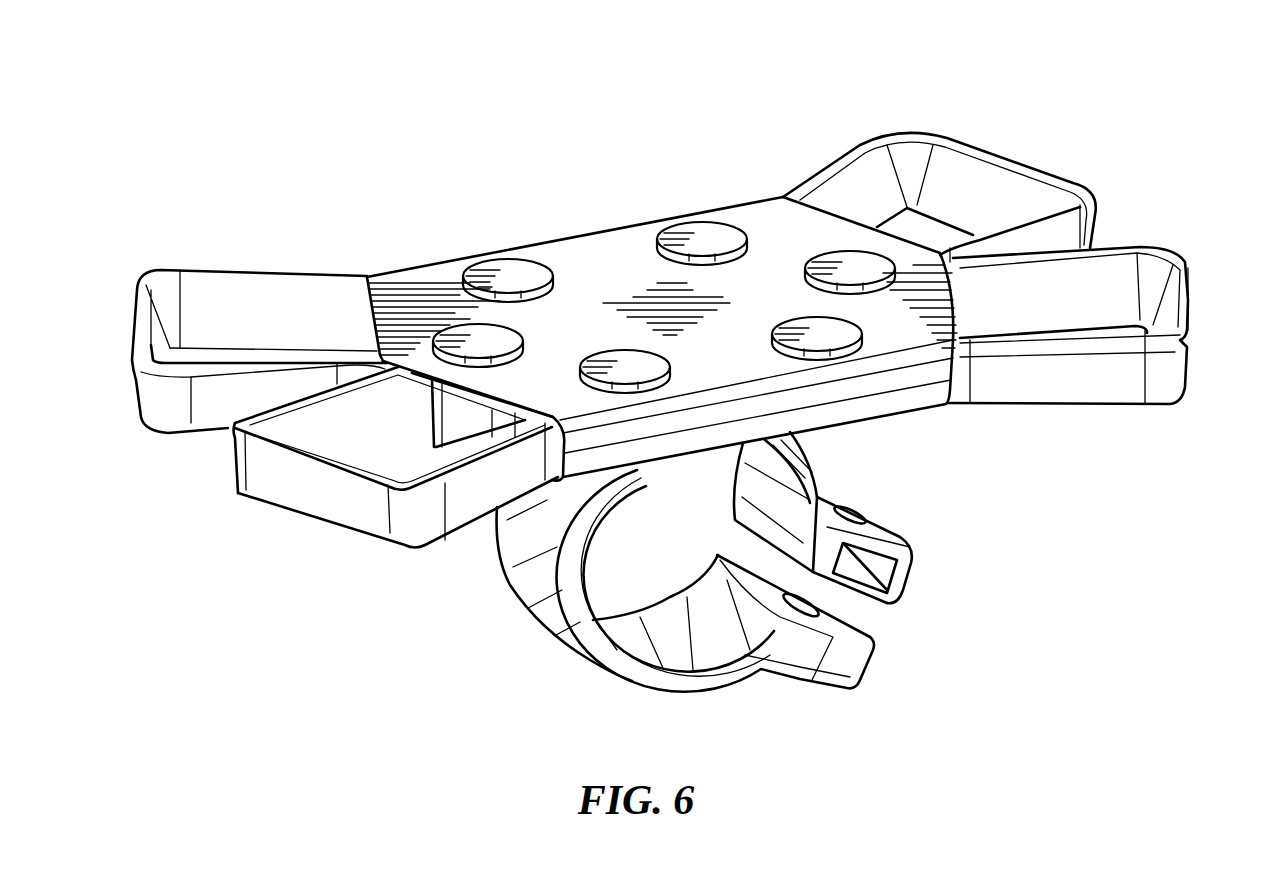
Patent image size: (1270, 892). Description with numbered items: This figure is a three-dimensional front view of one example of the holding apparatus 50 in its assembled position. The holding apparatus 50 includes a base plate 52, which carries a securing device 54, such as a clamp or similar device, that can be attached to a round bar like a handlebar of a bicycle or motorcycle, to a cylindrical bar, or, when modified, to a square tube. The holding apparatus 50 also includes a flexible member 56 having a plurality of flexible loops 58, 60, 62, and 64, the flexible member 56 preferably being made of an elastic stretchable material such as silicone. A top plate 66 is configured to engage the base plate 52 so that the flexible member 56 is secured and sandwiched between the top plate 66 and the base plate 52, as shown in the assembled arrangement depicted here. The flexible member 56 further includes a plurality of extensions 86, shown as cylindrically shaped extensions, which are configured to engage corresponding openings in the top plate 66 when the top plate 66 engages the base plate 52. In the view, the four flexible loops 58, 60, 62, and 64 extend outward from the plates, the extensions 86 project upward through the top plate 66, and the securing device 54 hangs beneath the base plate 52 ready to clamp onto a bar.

The holding apparatus 50 is at (1122, 86).
The base plate 52 is at (903, 416).
The securing device 54 is at (903, 537).
The flexible member 56 is at (1199, 241).
The flexible loop 58 is at (950, 130).
The flexible loop 60 is at (1172, 380).
The flexible loop 62 is at (221, 269).
The flexible loop 64 is at (313, 500).
The top plate 66 is at (413, 263).
The extensions 86 is at (620, 357).